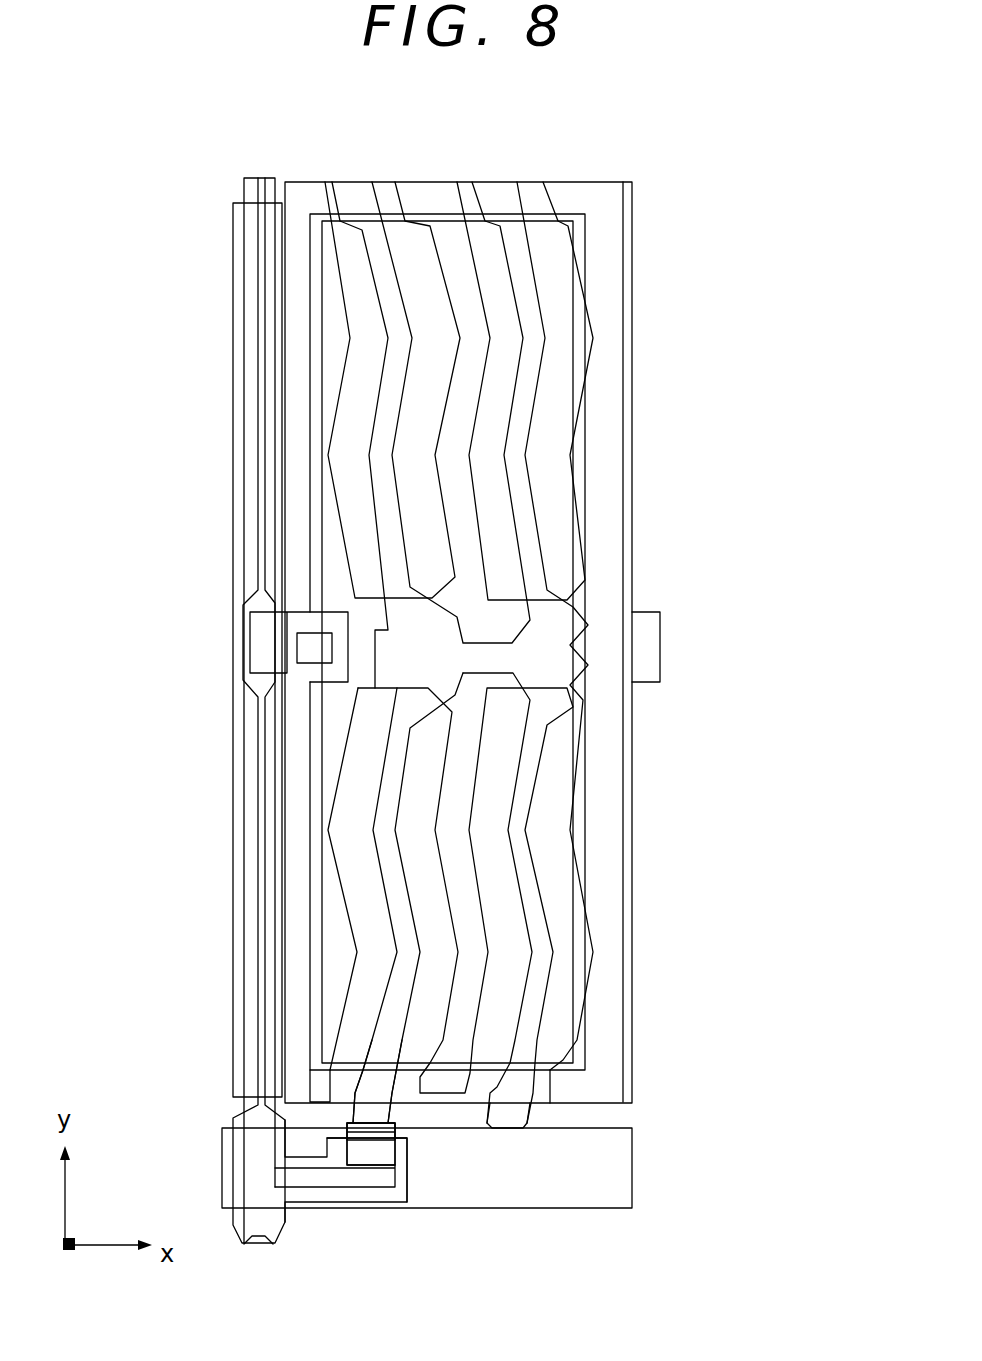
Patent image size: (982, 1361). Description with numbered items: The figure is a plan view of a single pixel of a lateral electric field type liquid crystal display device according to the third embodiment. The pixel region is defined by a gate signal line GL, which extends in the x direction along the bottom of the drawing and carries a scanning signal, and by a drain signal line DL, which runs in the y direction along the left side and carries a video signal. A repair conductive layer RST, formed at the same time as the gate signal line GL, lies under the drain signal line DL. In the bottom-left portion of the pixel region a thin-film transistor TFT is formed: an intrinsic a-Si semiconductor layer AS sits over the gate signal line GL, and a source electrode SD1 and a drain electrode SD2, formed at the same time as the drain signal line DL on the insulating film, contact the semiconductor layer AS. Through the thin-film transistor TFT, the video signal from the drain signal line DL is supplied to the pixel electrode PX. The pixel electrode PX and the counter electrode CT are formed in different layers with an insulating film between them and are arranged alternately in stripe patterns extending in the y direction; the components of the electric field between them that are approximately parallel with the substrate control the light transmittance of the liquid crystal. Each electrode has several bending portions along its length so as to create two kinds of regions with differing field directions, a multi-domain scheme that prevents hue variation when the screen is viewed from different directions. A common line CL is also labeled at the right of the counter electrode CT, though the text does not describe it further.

The drain signal line DL is at (245, 345).
The repair conductive layer RST is at (235, 856).
The counter electrode CT is at (483, 388).
The pixel electrode PX is at (373, 533).
The common line CL is at (660, 650).
The gate signal line GL is at (632, 1206).
The source electrode SD1 is at (418, 1147).
The drain electrode SD2 is at (312, 1183).
The semiconductor layer AS is at (365, 1203).
The thin-film transistor TFT is at (422, 1195).